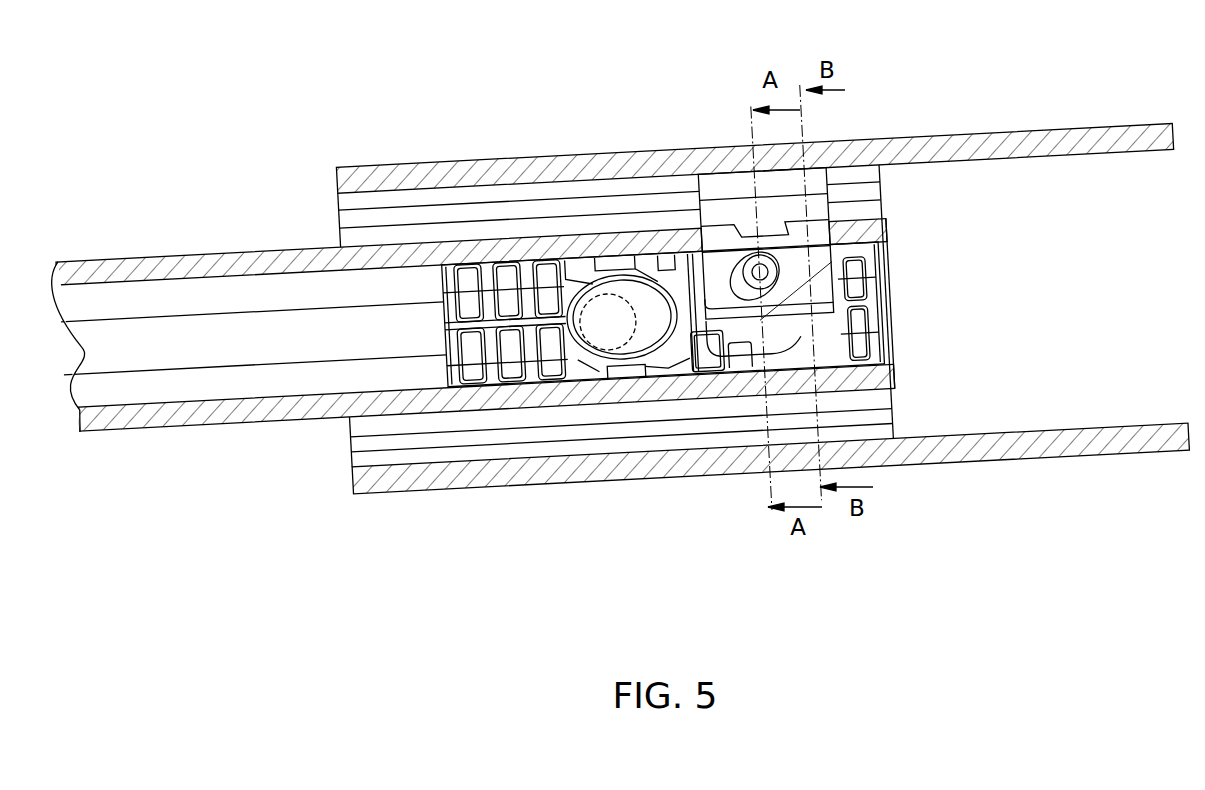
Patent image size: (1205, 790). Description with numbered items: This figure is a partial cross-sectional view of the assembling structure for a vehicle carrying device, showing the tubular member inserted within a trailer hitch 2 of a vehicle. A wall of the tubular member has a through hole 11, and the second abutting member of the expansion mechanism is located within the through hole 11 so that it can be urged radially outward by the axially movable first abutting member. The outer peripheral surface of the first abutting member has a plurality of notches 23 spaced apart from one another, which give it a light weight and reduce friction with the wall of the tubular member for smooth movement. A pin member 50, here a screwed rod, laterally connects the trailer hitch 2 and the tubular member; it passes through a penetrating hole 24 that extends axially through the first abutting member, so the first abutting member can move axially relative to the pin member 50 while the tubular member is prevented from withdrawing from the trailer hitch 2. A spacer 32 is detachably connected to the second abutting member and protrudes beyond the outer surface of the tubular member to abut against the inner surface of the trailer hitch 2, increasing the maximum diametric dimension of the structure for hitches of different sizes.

The trailer hitch 2 is at (998, 448).
The through hole 11 is at (737, 320).
The notches 23 is at (587, 377).
The penetrating hole 24 is at (652, 295).
The pin member 50 is at (603, 302).
The spacer 32 is at (826, 179).